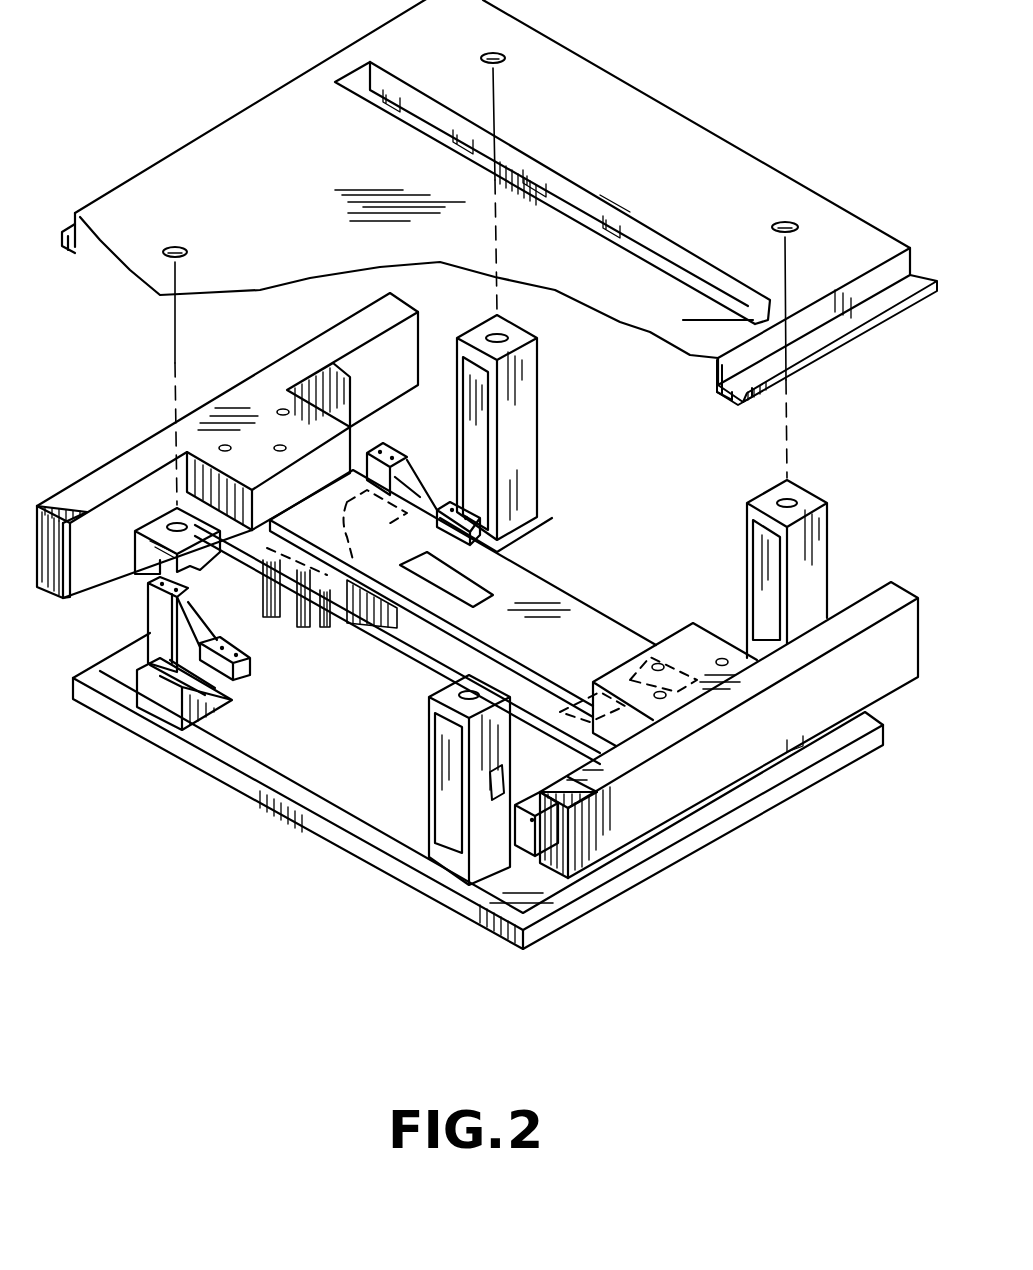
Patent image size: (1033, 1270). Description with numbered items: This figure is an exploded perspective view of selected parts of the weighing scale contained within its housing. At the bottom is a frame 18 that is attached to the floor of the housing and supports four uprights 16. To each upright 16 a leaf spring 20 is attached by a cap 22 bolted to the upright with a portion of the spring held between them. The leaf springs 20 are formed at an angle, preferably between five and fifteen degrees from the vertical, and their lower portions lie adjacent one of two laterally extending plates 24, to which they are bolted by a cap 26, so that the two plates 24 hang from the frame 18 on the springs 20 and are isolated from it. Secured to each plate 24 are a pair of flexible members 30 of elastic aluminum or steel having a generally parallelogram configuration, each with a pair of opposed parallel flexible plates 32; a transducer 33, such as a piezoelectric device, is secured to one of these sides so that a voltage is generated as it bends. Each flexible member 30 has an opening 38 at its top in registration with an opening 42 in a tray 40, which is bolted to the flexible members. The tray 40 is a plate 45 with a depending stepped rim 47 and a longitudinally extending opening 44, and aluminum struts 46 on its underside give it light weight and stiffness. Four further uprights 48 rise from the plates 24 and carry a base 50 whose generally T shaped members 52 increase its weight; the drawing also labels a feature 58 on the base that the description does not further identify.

The upright 16 is at (117, 667).
The frame 18 is at (500, 933).
The leaf spring 20 is at (153, 643).
The cap 22 is at (147, 588).
The laterally extending plate 24 is at (203, 713).
The cap 26 is at (237, 643).
The flexible member 30 is at (560, 438).
The flexible plate 32 is at (132, 573).
The transducer 33 is at (483, 862).
The opening 38 is at (167, 527).
The tray 40 is at (665, 106).
The opening 42 is at (185, 248).
The longitudinally extending opening 44 is at (645, 222).
The plate 45 is at (657, 348).
The strut 46 is at (583, 200).
The stepped rim 47 is at (727, 391).
The upright 48 is at (352, 552).
The base 50 is at (570, 590).
The T shaped member 52 is at (107, 463).
The plate slot 58 is at (410, 600).